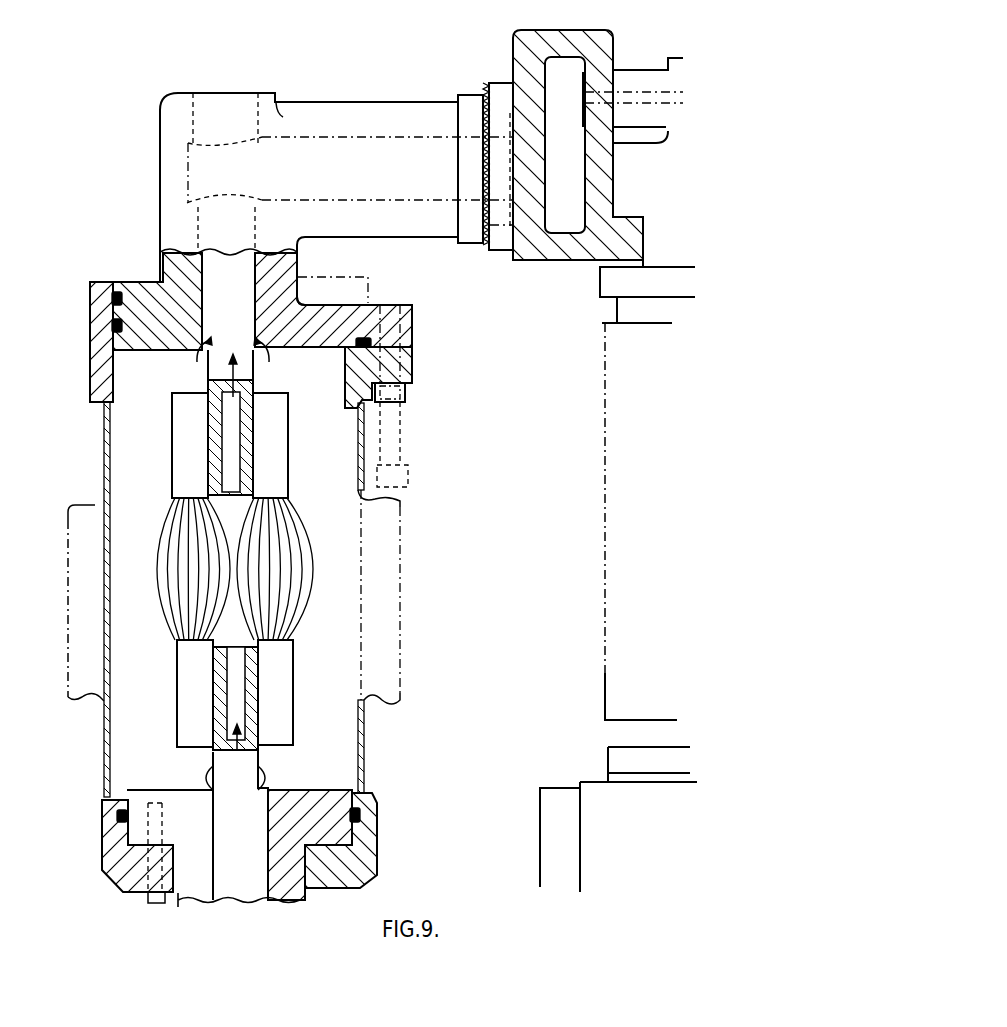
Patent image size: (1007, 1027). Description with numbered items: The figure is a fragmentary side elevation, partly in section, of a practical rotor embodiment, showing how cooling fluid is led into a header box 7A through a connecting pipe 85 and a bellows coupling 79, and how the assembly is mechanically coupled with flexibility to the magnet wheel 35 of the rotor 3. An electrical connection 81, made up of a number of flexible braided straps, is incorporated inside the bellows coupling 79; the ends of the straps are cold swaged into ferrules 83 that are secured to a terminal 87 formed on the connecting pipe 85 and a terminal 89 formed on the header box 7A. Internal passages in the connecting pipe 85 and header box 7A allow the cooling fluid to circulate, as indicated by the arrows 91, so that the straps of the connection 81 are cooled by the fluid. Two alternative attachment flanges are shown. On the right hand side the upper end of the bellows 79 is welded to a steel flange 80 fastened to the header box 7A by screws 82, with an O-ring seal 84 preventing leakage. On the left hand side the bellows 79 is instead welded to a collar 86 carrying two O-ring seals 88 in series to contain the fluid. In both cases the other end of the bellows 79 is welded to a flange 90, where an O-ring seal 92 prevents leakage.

The header box 7A is at (513, 36).
The rotor 3 is at (653, 497).
The magnet wheel 35 is at (607, 793).
The bellows coupling 79 is at (86, 515).
The steel flange 80 is at (413, 356).
The electrical connection 81 is at (170, 608).
The screws 82 is at (413, 388).
The ferrules 83 is at (213, 750).
The O-ring seal 84 is at (372, 343).
The connecting pipe 85 is at (292, 868).
The collar 86 is at (94, 372).
The terminal 87 is at (258, 690).
The O-ring seals 88 is at (112, 327).
The terminal 89 is at (250, 423).
The flange 90 is at (370, 834).
The arrows 91 is at (258, 353).
The O-ring seal 92 is at (360, 815).